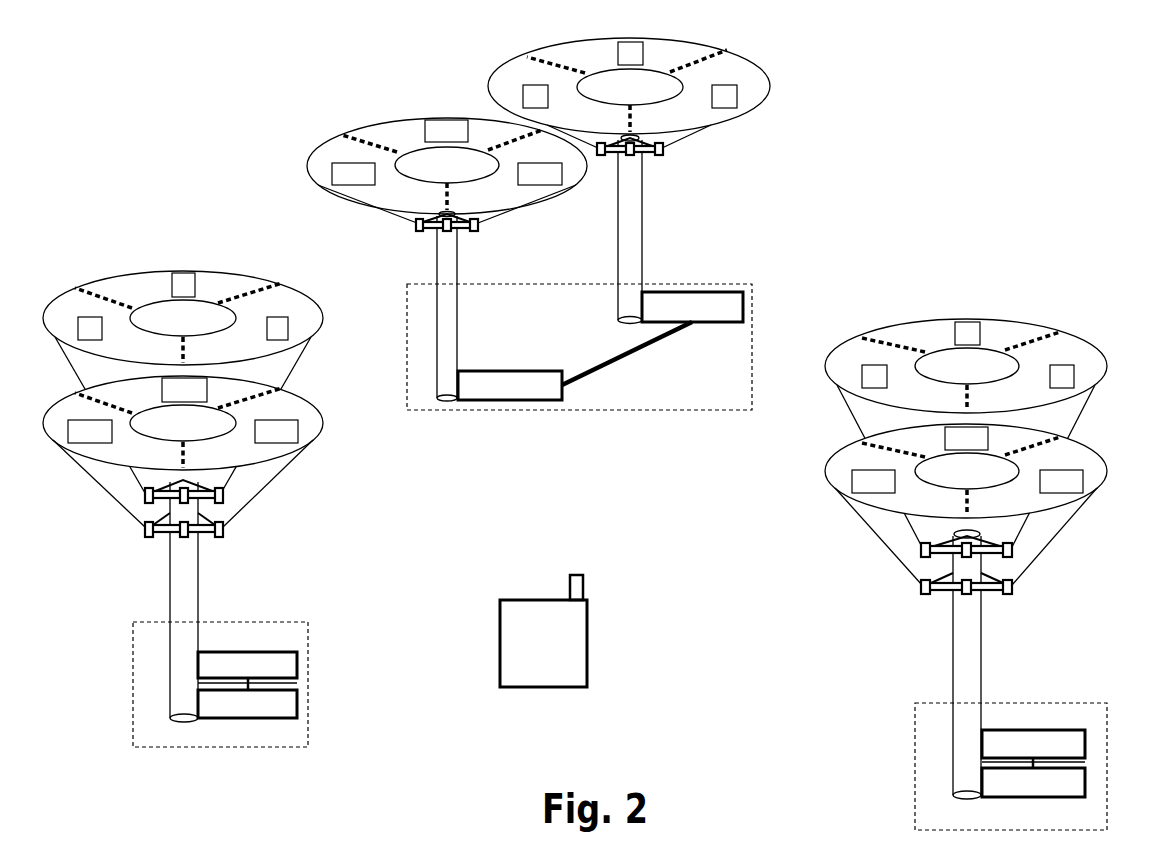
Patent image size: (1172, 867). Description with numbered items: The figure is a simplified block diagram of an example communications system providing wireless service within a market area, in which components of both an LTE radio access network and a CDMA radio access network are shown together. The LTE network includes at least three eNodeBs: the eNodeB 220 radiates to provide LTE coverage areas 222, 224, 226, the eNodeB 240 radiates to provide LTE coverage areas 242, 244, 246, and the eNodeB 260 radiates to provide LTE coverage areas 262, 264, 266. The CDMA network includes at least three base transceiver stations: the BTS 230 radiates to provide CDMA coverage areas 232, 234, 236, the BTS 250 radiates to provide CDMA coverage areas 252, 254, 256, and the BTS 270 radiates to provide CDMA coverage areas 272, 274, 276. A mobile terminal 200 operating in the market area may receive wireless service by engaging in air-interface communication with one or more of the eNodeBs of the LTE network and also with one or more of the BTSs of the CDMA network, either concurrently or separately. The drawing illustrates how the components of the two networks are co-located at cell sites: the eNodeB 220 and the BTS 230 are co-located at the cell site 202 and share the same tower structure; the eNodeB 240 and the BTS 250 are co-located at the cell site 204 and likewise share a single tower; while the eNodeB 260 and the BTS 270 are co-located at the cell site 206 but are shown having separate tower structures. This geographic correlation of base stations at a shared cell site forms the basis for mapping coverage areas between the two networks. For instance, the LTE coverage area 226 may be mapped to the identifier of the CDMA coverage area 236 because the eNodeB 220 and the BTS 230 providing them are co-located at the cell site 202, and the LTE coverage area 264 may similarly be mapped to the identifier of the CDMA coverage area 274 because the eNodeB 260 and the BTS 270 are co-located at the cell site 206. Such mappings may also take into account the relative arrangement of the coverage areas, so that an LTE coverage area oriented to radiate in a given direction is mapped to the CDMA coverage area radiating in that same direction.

The mobile terminal 200 is at (558, 687).
The cell site 202 is at (133, 687).
The cell site 204 is at (915, 767).
The cell site 206 is at (408, 300).
The eNodeB 220 is at (298, 661).
The LTE coverage area 222 is at (293, 285).
The LTE coverage area 224 is at (130, 272).
The LTE coverage area 226 is at (57, 298).
The base transceiver station 230 is at (298, 698).
The CDMA coverage area 232 is at (305, 447).
The CDMA coverage area 234 is at (236, 380).
The CDMA coverage area 236 is at (45, 412).
The eNodeB 240 is at (1085, 740).
The LTE coverage area 242 is at (1105, 355).
The LTE coverage area 244 is at (930, 320).
The LTE coverage area 246 is at (827, 377).
The base transceiver station 250 is at (1085, 778).
The CDMA coverage area 252 is at (1107, 472).
The CDMA coverage area 254 is at (1012, 427).
The CDMA coverage area 256 is at (825, 473).
The eNodeB 260 is at (745, 303).
The LTE coverage area 262 is at (515, 57).
The LTE coverage area 264 is at (698, 43).
The LTE coverage area 266 is at (767, 73).
The base transceiver station 270 is at (510, 400).
The CDMA coverage area 272 is at (318, 183).
The CDMA coverage area 274 is at (372, 123).
The CDMA coverage area 276 is at (542, 200).